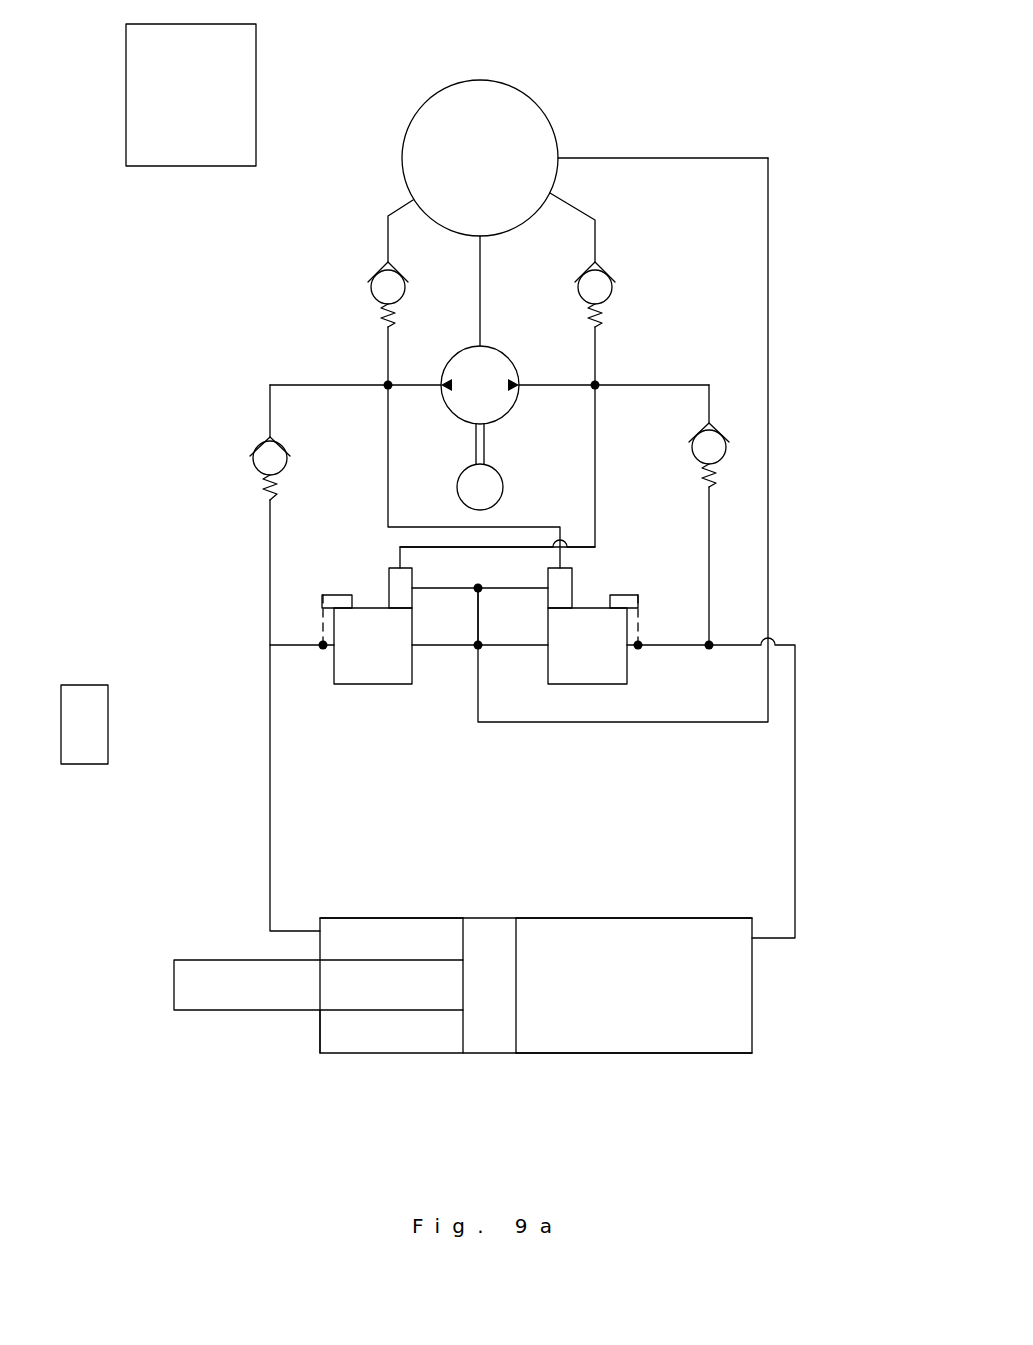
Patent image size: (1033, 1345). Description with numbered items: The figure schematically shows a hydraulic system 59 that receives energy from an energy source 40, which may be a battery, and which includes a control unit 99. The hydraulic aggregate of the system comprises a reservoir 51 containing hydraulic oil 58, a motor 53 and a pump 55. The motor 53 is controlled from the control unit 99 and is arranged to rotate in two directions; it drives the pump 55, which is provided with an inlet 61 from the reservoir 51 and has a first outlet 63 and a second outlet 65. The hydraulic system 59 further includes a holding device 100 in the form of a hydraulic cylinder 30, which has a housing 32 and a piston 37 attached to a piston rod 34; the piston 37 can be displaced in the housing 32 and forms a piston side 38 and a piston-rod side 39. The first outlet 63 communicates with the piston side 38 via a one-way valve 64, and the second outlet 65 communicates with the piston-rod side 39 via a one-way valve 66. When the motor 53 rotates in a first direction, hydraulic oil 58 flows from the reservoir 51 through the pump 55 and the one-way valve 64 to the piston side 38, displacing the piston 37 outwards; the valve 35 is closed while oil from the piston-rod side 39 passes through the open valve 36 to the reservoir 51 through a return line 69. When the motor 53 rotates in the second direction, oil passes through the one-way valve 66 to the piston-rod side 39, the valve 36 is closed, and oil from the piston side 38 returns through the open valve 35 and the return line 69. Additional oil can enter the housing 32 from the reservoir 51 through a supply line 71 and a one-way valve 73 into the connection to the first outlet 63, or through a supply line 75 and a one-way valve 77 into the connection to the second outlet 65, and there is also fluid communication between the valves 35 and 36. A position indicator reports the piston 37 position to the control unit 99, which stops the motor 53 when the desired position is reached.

The hydraulic cylinder 30 is at (438, 1068).
The housing 32 is at (620, 1053).
The piston rod 34 is at (313, 995).
The valve 35 is at (582, 633).
The valve 36 is at (356, 629).
The piston 37 is at (480, 995).
The piston side 38 is at (682, 1003).
The piston-rod side 39 is at (425, 1023).
The energy source 40 is at (205, 105).
The reservoir 51 is at (420, 166).
The motor 53 is at (470, 491).
The pump 55 is at (455, 370).
The hydraulic oil 58 is at (497, 168).
The hydraulic system 59 is at (753, 115).
The inlet 61 is at (478, 332).
The first outlet 63 is at (618, 385).
The one-way valve 64 is at (712, 447).
The second outlet 65 is at (367, 388).
The one-way valve 66 is at (270, 458).
The return line 69 is at (768, 503).
The supply line 71 is at (596, 238).
The one-way valve 73 is at (592, 287).
The supply line 75 is at (386, 239).
The one-way valve 77 is at (387, 288).
The control unit 99 is at (80, 720).
The holding device 100 is at (645, 1073).